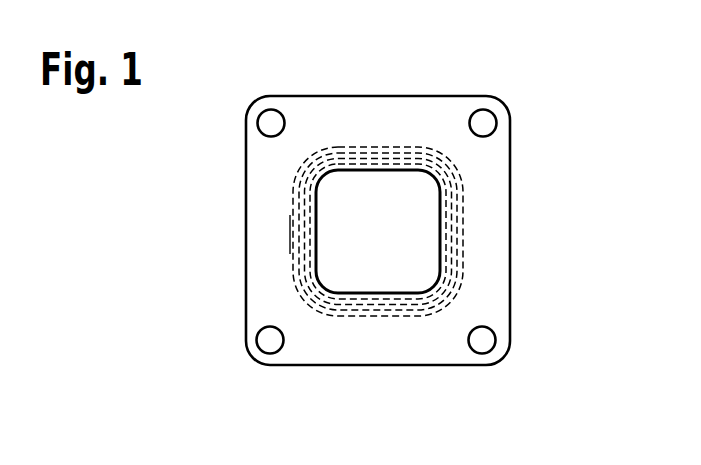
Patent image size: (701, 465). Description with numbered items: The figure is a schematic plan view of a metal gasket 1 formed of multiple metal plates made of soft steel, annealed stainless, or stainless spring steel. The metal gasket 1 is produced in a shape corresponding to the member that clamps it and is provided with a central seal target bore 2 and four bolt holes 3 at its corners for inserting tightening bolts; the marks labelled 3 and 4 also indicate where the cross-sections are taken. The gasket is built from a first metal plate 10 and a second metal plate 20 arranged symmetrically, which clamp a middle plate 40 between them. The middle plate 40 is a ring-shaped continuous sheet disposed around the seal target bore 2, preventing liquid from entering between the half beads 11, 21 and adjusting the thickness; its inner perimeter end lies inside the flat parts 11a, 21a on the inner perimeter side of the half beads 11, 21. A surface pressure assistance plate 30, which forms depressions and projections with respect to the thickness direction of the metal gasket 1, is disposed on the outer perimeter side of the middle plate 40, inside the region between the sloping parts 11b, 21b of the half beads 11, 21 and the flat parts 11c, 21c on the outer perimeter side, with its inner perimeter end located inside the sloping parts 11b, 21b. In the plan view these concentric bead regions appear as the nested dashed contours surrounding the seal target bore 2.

The metal gasket 1 is at (368, 237).
The first metal plate 10 is at (378, 194).
The second metal plate 20 is at (390, 97).
The seal target bore 2 is at (427, 177).
The bolt hole 3 is at (490, 125).
The section line 4- 4 is at (290, 213).
The half bead 11 is at (368, 290).
The half bead 21 is at (368, 290).
The flat part on the inner perimeter side 11a is at (430, 358).
The flat part on the inner perimeter side 21a is at (387, 297).
The sloping part 11b is at (229, 279).
The sloping part 21b is at (300, 286).
The flat part on the outer perimeter side 11c is at (347, 378).
The flat part on the outer perimeter side 21c is at (328, 317).
The surface pressure assistance plate 30 is at (460, 242).
The middle plate 40 is at (443, 200).